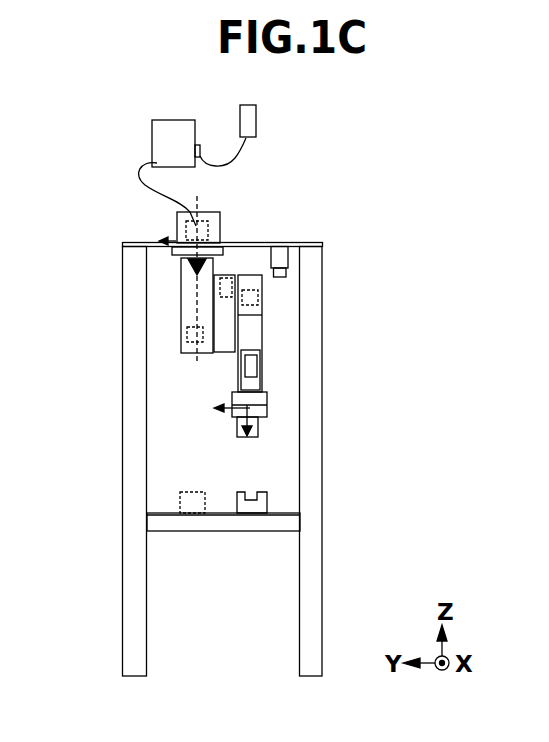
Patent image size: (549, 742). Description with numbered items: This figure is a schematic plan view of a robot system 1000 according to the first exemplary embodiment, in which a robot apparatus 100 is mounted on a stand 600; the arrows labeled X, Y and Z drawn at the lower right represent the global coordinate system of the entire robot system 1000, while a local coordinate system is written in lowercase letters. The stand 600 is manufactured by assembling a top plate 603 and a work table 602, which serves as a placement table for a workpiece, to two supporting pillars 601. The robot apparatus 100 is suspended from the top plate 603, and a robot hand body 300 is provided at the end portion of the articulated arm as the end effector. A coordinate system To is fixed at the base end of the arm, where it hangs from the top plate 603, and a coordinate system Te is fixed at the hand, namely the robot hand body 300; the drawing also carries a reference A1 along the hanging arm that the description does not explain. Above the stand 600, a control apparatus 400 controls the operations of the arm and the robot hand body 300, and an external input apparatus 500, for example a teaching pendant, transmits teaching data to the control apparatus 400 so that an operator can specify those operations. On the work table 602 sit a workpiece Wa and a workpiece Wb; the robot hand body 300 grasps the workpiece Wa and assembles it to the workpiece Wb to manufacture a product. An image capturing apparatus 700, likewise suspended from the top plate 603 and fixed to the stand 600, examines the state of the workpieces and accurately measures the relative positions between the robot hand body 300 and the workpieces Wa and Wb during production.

The robot system 1000 is at (427, 109).
The robot apparatus 100 is at (100, 83).
The robot hand body 300 is at (274, 445).
The control apparatus 400 is at (173, 120).
The external input apparatus 500 is at (256, 122).
The stand 600 is at (340, 270).
The supporting pillars 601 is at (122, 577).
The work table 602 is at (222, 523).
The top plate 603 is at (295, 245).
The image capturing apparatus 700 is at (278, 245).
The workpiece Wa is at (182, 513).
The workpiece Wb is at (253, 513).
The coordinate system To is at (177, 216).
The coordinate system Te is at (227, 429).
The spindle axis A1 is at (199, 266).